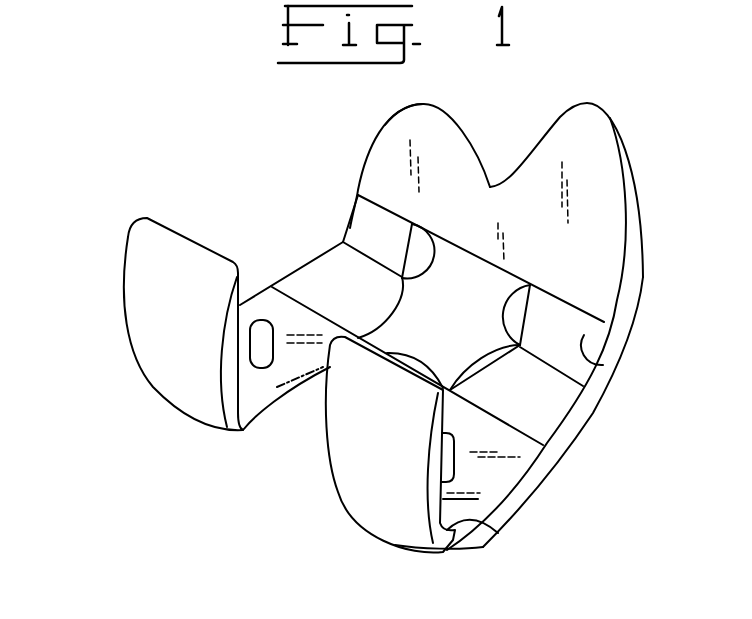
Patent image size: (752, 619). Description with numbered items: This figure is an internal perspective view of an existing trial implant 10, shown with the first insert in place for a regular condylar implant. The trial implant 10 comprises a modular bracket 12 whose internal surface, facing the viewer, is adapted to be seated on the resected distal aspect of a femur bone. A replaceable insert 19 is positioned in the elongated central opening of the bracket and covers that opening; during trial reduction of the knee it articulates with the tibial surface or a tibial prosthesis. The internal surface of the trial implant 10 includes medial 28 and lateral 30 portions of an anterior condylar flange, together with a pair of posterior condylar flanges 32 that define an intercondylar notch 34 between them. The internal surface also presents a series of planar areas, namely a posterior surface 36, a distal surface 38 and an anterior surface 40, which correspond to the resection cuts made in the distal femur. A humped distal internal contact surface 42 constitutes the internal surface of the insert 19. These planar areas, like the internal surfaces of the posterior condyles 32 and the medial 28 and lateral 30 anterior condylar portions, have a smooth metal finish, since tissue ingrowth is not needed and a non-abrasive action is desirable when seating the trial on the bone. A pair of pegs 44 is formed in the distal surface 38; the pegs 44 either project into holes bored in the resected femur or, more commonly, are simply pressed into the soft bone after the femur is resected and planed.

The trial implant 10 is at (190, 156).
The modular bracket 12 is at (605, 397).
The replaceable insert 19 is at (482, 283).
The medial portion of anterior condylar flange 28 is at (607, 198).
The lateral portion of anterior condylar flange 30 is at (407, 122).
The posterior condylar flanges 32 is at (157, 300).
The intercondylar notch 34 is at (284, 396).
The posterior surface 36 is at (498, 533).
The distal surface 38 is at (318, 282).
The anterior surface 40 is at (365, 227).
The humped distal internal contact surface 42 is at (473, 322).
The pegs 44 is at (257, 318).